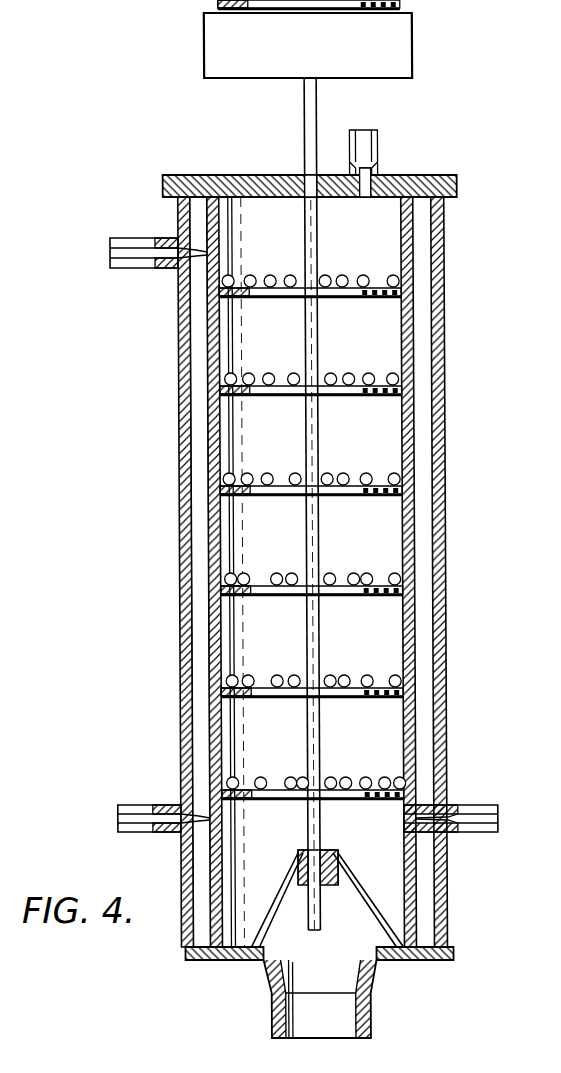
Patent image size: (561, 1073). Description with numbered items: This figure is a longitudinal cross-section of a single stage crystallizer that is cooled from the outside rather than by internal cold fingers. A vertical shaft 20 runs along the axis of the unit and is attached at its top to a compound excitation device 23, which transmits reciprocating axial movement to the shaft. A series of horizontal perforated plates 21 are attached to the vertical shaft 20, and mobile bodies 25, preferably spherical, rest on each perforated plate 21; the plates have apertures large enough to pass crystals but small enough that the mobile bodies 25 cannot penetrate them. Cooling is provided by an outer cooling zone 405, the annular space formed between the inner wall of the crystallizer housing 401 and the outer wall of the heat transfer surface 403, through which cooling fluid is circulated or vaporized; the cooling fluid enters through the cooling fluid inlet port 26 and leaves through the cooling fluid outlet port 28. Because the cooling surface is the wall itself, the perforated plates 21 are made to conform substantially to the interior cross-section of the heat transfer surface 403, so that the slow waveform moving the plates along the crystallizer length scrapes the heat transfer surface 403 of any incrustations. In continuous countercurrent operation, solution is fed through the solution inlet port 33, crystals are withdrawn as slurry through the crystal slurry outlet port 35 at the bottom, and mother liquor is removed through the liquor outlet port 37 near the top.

The compound excitation device 23 is at (322, 58).
The vertical shaft 20 is at (303, 118).
The liquor outlet port 37 is at (379, 146).
The cooling fluid inlet port 26 is at (128, 238).
The mobile bodies 25 is at (364, 275).
The perforated plates 21 is at (373, 300).
The heat transfer surface 403 is at (224, 453).
The crystallizer housing 401 is at (178, 480).
The outer cooling zone 405 is at (204, 572).
The cooling fluid outlet port 28 is at (135, 805).
The solution inlet port 33 is at (470, 805).
The crystal slurry outlet port 35 is at (369, 1022).